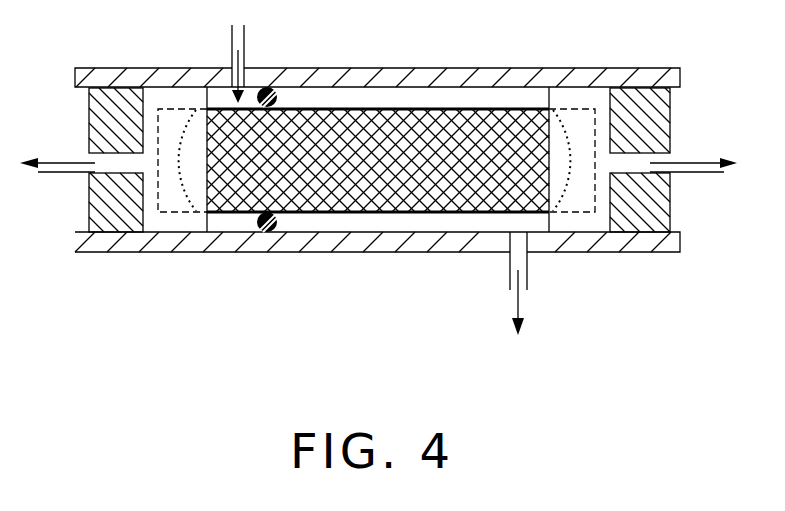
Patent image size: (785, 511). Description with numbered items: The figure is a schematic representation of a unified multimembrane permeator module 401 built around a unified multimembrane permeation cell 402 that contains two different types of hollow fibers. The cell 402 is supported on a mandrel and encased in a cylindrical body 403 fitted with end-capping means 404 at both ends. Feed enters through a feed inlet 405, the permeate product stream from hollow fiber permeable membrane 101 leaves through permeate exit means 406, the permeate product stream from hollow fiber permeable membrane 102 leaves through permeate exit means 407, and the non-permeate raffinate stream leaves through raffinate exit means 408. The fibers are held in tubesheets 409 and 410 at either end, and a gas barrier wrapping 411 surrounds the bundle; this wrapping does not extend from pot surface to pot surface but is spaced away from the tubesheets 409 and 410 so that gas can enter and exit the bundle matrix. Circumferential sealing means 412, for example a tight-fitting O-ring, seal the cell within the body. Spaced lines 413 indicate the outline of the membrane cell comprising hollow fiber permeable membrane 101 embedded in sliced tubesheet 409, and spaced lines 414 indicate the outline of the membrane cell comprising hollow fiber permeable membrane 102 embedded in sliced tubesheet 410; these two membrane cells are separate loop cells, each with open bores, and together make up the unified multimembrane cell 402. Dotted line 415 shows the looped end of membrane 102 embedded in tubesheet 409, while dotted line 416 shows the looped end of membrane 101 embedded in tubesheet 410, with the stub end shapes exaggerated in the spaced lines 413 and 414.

The hollow fiber permeable membrane 101 is at (176, 140).
The hollow fiber permeable membrane 102 is at (598, 145).
The unified multimembrane permeator module 401 is at (255, 262).
The unified multimembrane permeation cell 402 is at (400, 190).
The cylindrical body 403 is at (325, 72).
The end-capping means 404 is at (100, 208).
The feed inlet 405 is at (232, 62).
The permeate exit means 406 is at (72, 167).
The permeate exit means 407 is at (697, 165).
The raffinate exit means 408 is at (512, 282).
The tubesheet 409 is at (160, 93).
The tubesheet 410 is at (580, 98).
The gas barrier wrapping 411 is at (413, 98).
The circumferential sealing means 412 is at (277, 230).
The spaced lines 413 is at (158, 212).
The spaced lines 414 is at (588, 213).
The dotted line 415 is at (182, 213).
The dotted line 416 is at (565, 212).